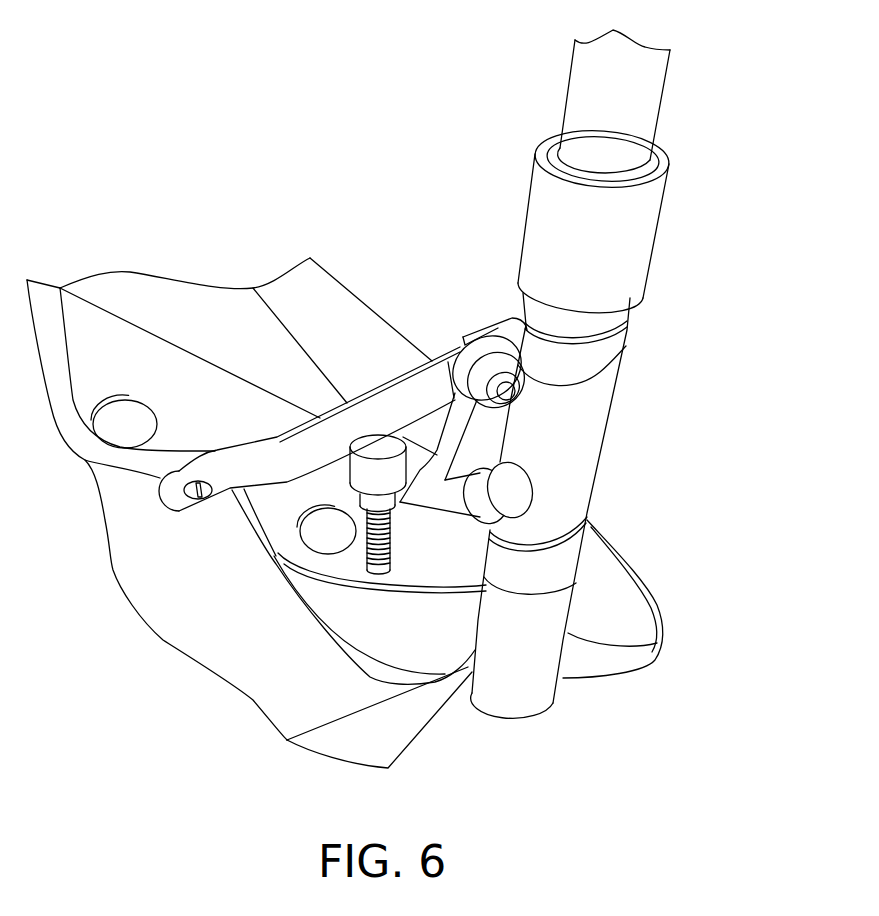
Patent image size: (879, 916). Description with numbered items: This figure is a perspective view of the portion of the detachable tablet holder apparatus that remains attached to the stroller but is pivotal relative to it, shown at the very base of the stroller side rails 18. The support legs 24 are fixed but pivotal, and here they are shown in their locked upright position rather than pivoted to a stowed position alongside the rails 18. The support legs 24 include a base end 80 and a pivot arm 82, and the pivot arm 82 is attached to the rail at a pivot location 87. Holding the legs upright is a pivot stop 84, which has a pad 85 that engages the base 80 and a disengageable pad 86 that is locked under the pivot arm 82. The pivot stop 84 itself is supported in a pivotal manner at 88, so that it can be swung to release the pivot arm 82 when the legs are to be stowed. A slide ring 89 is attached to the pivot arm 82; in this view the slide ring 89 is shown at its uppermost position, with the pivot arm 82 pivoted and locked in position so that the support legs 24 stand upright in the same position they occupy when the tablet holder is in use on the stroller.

The side rails 18 is at (110, 327).
The support legs 24 is at (548, 93).
The base end 80 is at (567, 442).
The pivot arm 82 is at (382, 433).
The pivot stop 84 is at (438, 536).
The pad 85 is at (520, 488).
The disengageable pad 86 is at (408, 397).
The pivot location 87 is at (190, 498).
The pivotal support 88 is at (477, 318).
The slide ring 89 is at (602, 355).